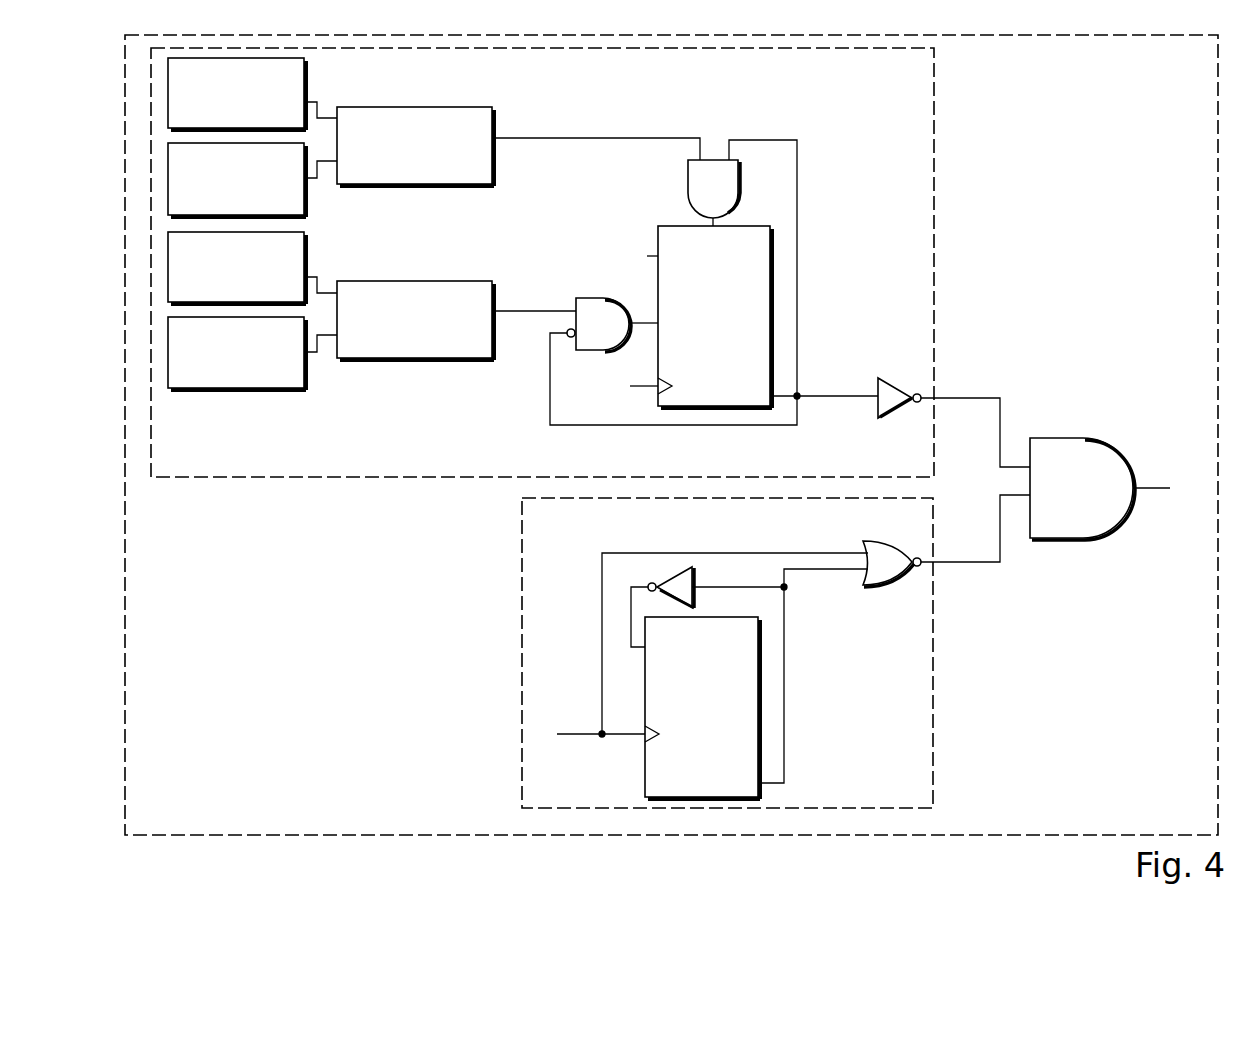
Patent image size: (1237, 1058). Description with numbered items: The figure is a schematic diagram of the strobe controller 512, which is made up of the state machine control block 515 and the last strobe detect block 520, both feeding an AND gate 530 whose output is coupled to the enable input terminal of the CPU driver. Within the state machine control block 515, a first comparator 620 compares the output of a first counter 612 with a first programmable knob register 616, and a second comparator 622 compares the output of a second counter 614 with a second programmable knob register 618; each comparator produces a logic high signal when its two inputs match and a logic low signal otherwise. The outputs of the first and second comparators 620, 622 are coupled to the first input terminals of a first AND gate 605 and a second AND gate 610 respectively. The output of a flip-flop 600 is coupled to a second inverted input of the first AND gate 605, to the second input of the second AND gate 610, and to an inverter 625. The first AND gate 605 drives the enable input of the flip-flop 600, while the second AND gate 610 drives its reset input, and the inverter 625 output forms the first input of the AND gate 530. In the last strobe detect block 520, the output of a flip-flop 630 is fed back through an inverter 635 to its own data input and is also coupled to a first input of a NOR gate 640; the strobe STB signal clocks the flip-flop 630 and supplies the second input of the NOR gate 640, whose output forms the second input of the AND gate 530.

The strobe controller 512 is at (1186, 803).
The state machine control block 515 is at (897, 468).
The last strobe detect block 520 is at (912, 795).
The AND gate 530 is at (1087, 501).
The flip-flop 600 is at (735, 324).
The first AND gate 605 is at (625, 337).
The second AND gate 610 is at (732, 192).
The first counter 612 is at (290, 298).
The second counter 614 is at (290, 123).
The first programmable knob register 616 is at (290, 383).
The second programmable knob register 618 is at (290, 208).
The first comparator 620 is at (480, 353).
The second comparator 622 is at (480, 180).
The inverter 625 is at (886, 376).
The flip-flop 630 is at (723, 717).
The inverter 635 is at (670, 574).
The NOR gate 640 is at (866, 540).